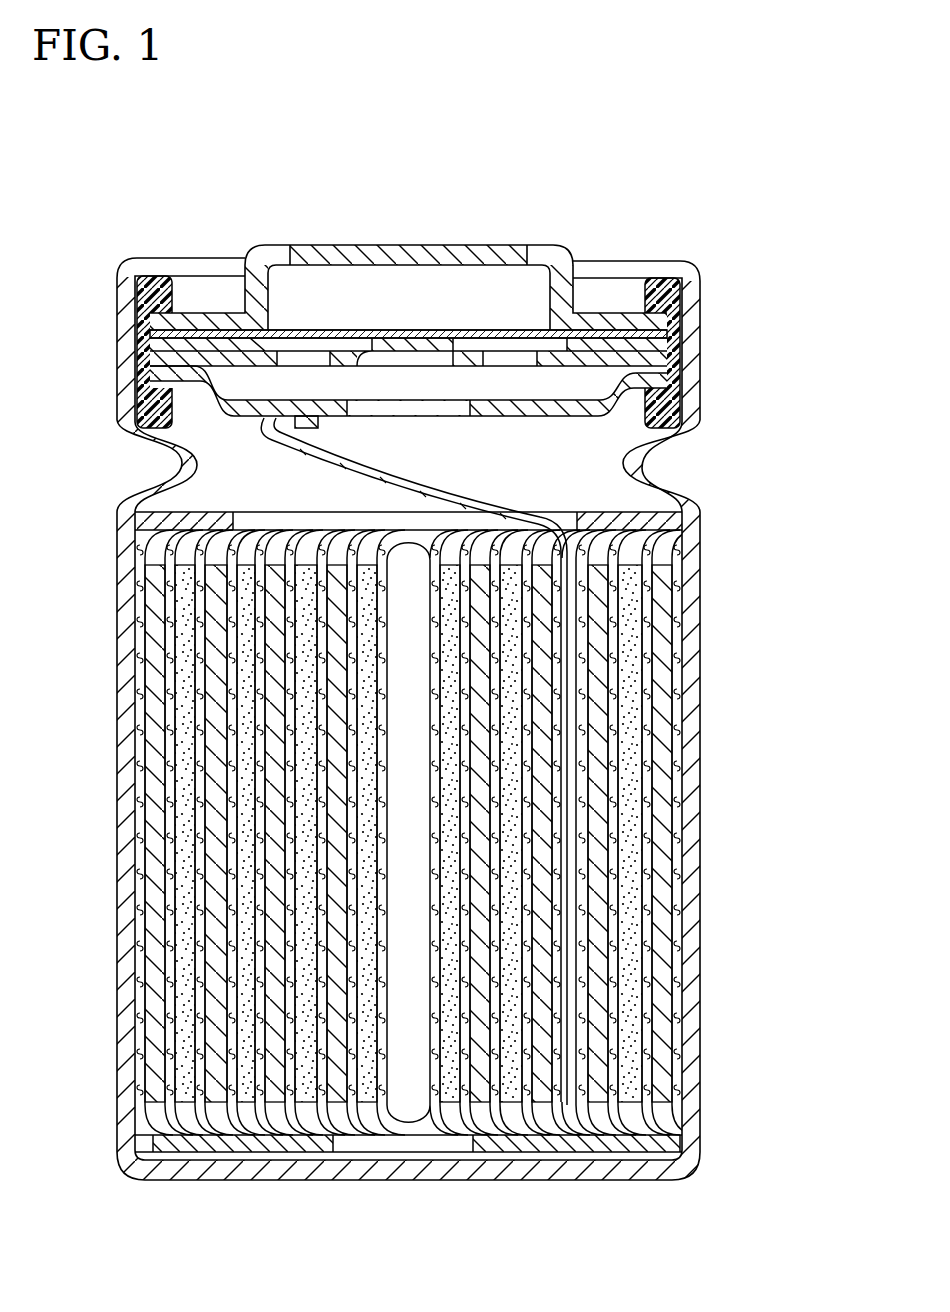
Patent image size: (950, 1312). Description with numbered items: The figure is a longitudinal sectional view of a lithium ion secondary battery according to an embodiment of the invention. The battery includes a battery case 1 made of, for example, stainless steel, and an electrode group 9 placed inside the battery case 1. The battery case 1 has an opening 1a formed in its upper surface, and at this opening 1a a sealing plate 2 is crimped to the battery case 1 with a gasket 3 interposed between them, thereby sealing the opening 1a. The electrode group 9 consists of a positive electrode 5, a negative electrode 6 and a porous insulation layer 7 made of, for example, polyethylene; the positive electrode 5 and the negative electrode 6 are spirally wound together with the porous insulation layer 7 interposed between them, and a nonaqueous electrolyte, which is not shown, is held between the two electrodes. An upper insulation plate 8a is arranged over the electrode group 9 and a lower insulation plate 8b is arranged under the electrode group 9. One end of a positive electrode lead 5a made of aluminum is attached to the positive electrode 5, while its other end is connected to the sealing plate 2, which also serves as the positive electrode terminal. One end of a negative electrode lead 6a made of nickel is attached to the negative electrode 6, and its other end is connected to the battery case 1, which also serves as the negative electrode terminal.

The battery case 1 is at (118, 692).
The opening 1a is at (562, 254).
The sealing plate 2 is at (322, 258).
The gasket 3 is at (668, 337).
The positive electrode 5 is at (630, 927).
The positive electrode lead 5a is at (455, 498).
The negative electrode 6 is at (660, 870).
The negative electrode lead 6a is at (470, 1178).
The porous insulation layer 7 is at (780, 945).
The upper insulation plate 8a is at (675, 522).
The lower insulation plate 8b is at (682, 1143).
The electrode group 9 is at (478, 832).